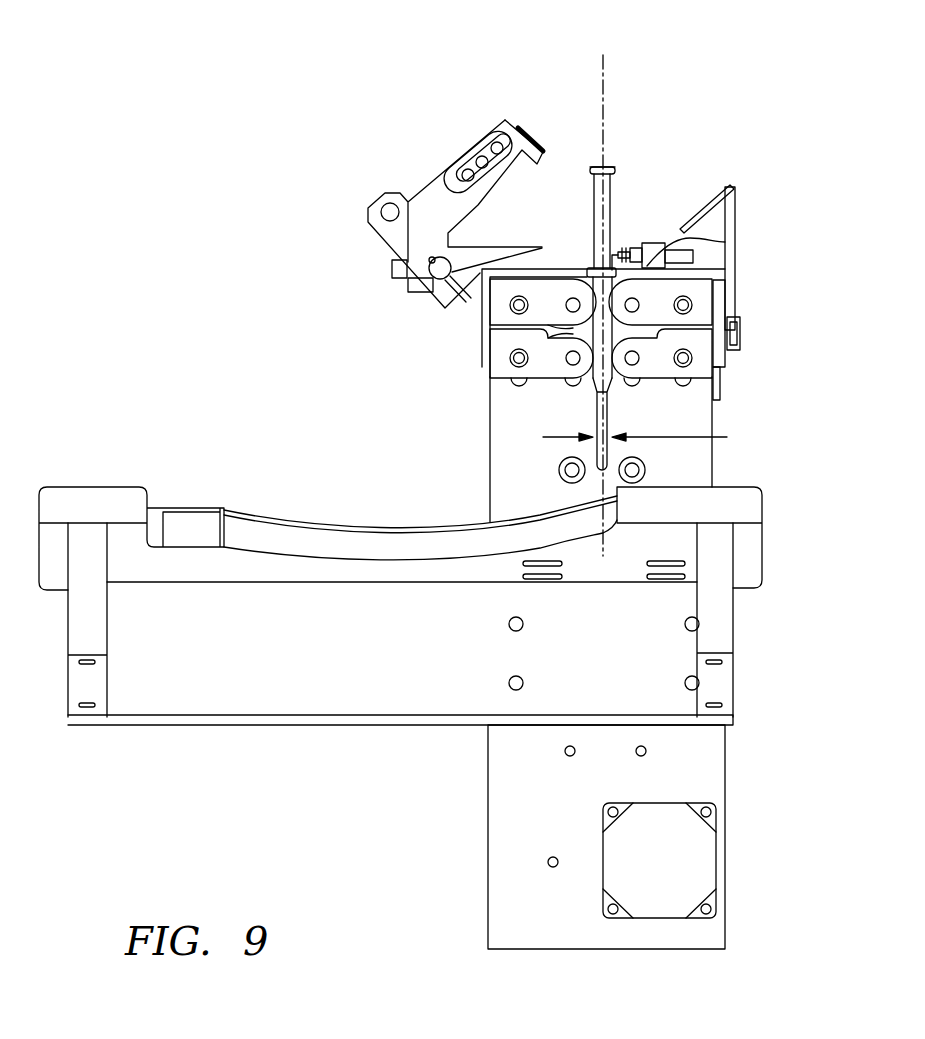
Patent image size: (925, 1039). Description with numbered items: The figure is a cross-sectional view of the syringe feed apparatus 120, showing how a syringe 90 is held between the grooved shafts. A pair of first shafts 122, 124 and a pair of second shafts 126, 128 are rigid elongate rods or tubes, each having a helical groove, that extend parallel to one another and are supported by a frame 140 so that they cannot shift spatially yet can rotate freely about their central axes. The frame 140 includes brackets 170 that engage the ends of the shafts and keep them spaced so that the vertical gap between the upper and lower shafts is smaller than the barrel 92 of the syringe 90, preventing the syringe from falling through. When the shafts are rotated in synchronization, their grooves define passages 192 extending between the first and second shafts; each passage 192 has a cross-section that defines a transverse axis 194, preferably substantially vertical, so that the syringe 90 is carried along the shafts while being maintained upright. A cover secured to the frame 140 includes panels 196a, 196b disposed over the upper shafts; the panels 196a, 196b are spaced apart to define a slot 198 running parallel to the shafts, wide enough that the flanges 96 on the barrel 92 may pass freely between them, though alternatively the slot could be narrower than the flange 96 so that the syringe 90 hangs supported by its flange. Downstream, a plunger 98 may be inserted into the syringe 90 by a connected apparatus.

The transverse axis 194 is at (601, 63).
The syringe 90 is at (622, 180).
The plunger 98 is at (598, 164).
The slot 198 is at (625, 265).
The flange 96 is at (604, 283).
The barrel 92 is at (600, 330).
The first shaft 122 is at (633, 275).
The second shaft 126 is at (570, 279).
The panel 196a is at (440, 268).
The panel 196b is at (737, 247).
The syringe feed apparatus 120 is at (799, 308).
The bracket 170 is at (700, 335).
The frame 140 is at (748, 333).
The second shaft 128 is at (572, 386).
The first shaft 124 is at (630, 386).
The passage 192 is at (655, 438).